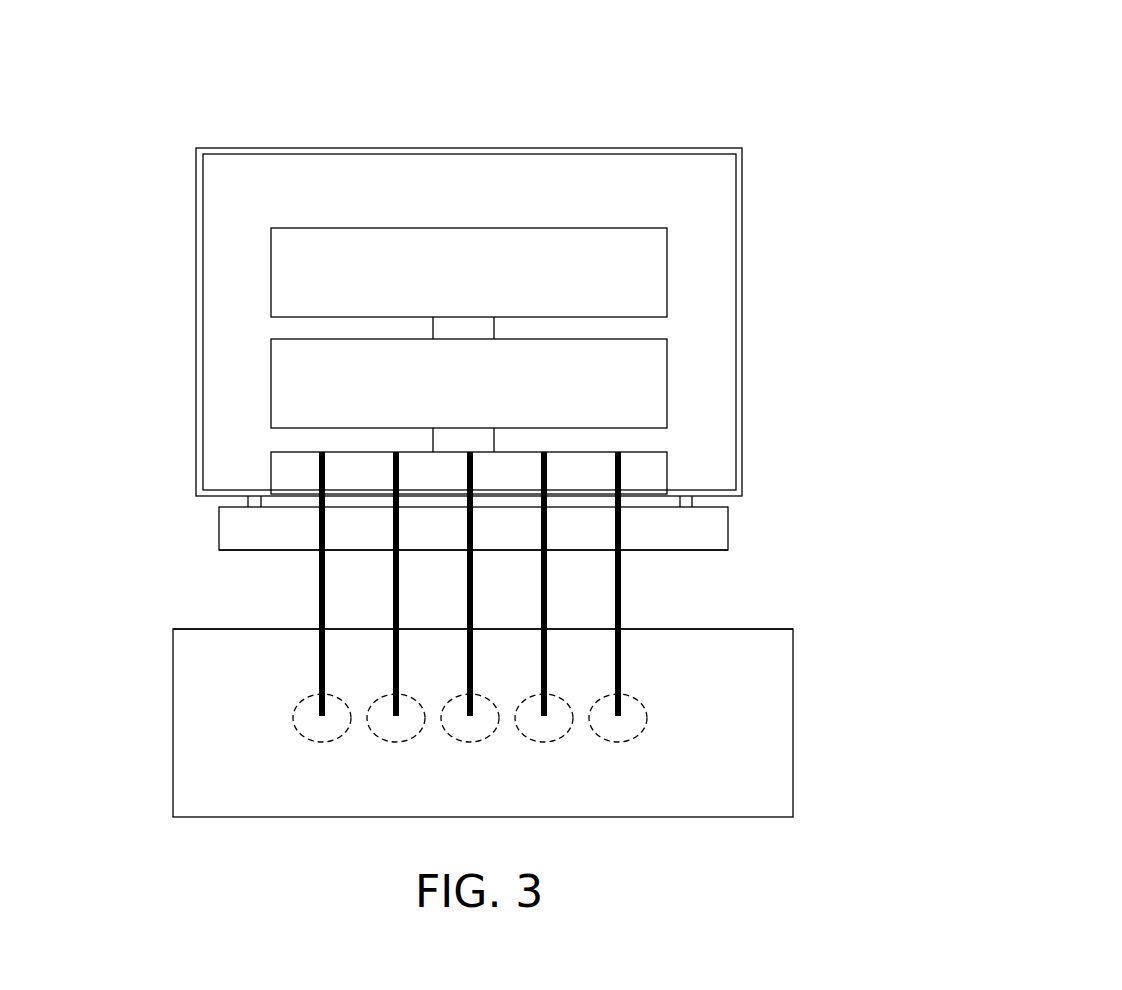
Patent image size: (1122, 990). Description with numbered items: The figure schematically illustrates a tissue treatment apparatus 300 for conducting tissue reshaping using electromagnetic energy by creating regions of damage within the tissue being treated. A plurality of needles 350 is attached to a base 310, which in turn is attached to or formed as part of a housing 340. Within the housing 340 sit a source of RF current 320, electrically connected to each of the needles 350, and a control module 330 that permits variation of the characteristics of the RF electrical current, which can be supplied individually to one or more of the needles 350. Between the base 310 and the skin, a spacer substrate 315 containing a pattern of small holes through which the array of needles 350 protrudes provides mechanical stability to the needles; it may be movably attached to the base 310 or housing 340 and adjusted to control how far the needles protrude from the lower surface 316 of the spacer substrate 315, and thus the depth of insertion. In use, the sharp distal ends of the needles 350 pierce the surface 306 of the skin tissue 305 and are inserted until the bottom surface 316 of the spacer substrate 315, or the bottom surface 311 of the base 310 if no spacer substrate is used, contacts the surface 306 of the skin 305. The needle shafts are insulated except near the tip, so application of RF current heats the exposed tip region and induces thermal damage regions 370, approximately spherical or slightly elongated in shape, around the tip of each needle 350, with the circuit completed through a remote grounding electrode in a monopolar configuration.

The tissue treatment apparatus 300 is at (477, 408).
The housing 340 is at (297, 148).
The control module 330 is at (650, 256).
The source of RF current 320 is at (653, 373).
The base 310 is at (650, 463).
The bottom surface of base 311 is at (290, 493).
The spacer substrate 315 is at (242, 539).
The lower surface of spacer substrate 316 is at (700, 552).
The needles 350 is at (618, 587).
The skin tissue 305 is at (728, 707).
The surface of skin 306 is at (728, 625).
The thermal damage regions 370 is at (612, 740).